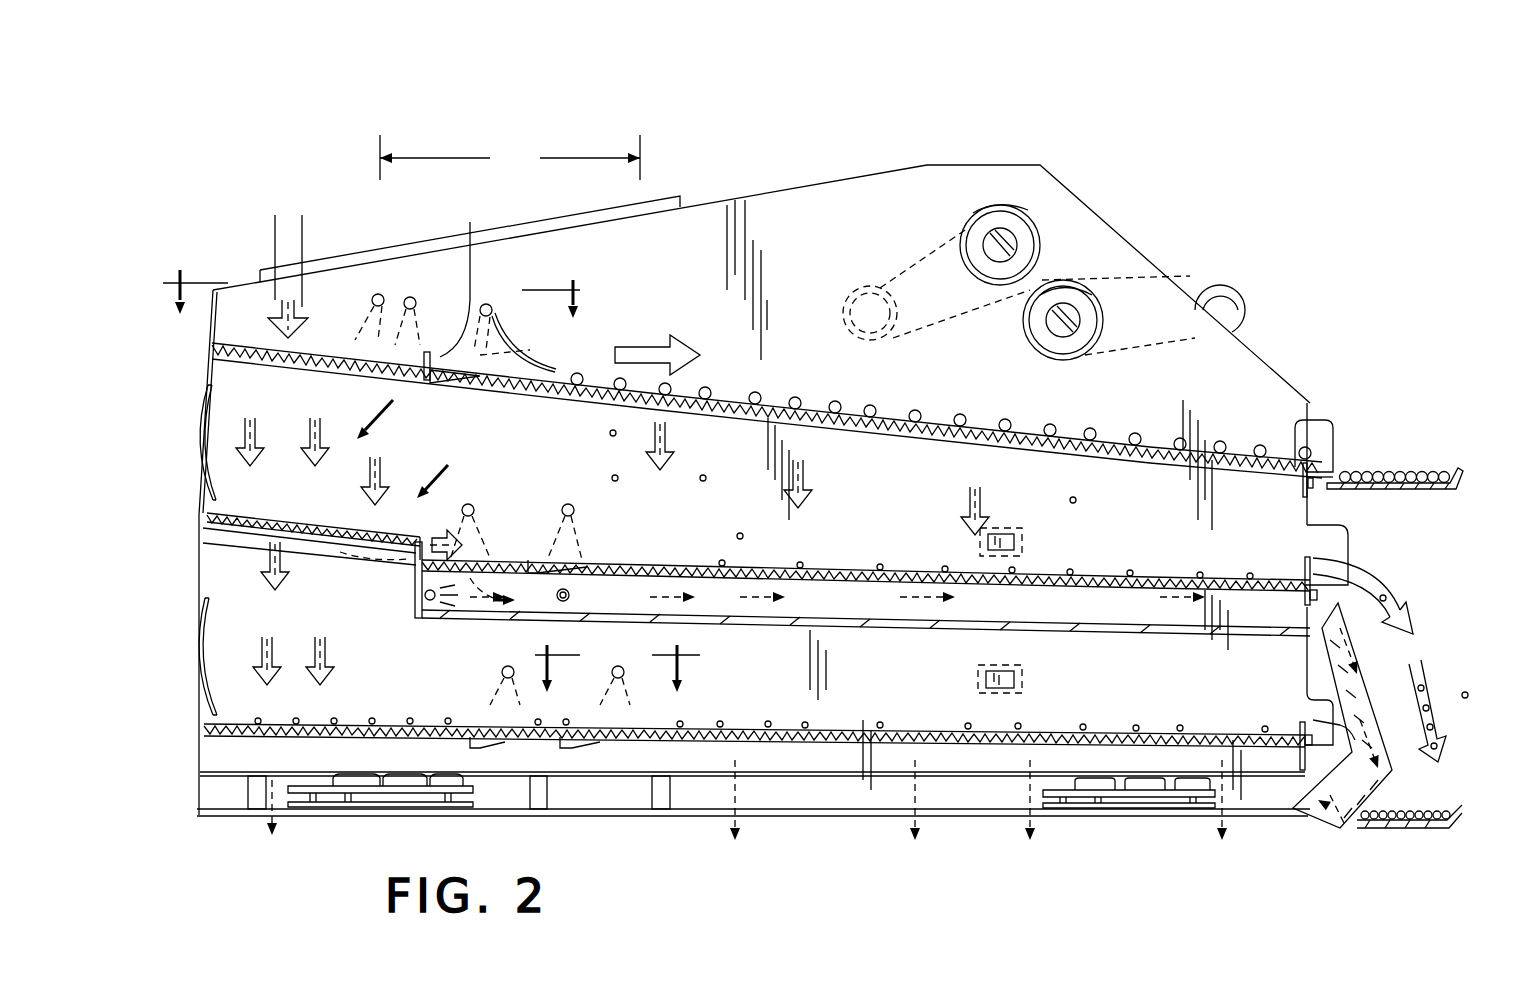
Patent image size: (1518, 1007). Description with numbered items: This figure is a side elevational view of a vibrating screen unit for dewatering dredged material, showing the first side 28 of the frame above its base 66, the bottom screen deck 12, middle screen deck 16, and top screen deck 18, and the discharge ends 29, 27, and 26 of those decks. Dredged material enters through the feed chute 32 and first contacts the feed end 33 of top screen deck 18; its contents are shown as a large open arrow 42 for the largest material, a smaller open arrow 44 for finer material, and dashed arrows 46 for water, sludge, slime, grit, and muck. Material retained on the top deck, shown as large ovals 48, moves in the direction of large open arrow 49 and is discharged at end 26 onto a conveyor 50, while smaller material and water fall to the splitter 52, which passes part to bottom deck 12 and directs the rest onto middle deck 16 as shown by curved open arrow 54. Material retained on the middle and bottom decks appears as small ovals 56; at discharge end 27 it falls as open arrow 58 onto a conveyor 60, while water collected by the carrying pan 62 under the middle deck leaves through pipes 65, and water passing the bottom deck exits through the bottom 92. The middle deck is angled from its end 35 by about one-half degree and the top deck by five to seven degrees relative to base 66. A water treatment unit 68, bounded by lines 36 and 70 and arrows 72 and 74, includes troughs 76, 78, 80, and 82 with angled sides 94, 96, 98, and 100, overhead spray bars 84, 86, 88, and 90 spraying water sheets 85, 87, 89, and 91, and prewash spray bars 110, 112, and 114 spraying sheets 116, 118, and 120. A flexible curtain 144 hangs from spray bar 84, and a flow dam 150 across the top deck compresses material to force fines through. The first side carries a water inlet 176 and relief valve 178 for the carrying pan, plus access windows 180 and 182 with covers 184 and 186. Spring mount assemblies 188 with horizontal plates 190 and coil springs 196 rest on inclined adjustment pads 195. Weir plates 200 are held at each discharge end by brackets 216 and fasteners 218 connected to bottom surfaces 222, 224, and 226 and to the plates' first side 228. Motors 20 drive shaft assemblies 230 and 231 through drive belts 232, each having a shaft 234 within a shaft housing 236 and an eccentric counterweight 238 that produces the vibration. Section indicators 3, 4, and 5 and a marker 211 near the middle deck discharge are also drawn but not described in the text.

The section line 3 is at (372, 276).
The section arrow 4 is at (411, 441).
The section line 5 is at (617, 657).
The bottom screen deck 12 is at (205, 710).
The middle screen deck 16 is at (200, 500).
The top screen deck 18 is at (215, 347).
The motor 20 is at (858, 285).
The discharge end of top screen deck 26 is at (1336, 450).
The discharge end of middle screen deck 27 is at (1325, 560).
The first side of frame 28 is at (755, 200).
The discharge end of bottom screen deck 29 is at (1320, 715).
The feed chute 32 is at (345, 256).
The feed end of top screen deck 33 is at (215, 348).
The end of middle screen deck 35 is at (414, 566).
The boundary line 36 is at (380, 147).
The large open arrow 42 is at (275, 235).
The smaller open arrow 44 is at (300, 302).
The dashed arrow 46 is at (285, 308).
The large ovals 48 is at (580, 374).
The large open arrow 49 is at (630, 340).
The conveyor 50 is at (1452, 492).
The splitter 52 is at (215, 532).
The curved large open arrow 54 is at (350, 562).
The small ovals 56 is at (618, 480).
The open arrow 58 is at (1415, 632).
The conveyor 60 is at (1372, 680).
The carrying pan 62 is at (1098, 626).
The pipe 65 is at (1355, 700).
The base 66 is at (575, 818).
The water treatment unit 68 is at (532, 250).
The boundary line 70 is at (640, 145).
The boundary arrow 72 is at (490, 156).
The boundary arrow 74 is at (580, 160).
The trough 76 is at (431, 400).
The trough 78 is at (510, 595).
The trough 80 is at (475, 742).
The trough 82 is at (575, 745).
The overhead spray bar 84 is at (487, 303).
The high pressure sheet of water 85 is at (520, 351).
The overhead spray bar 86 is at (568, 504).
The high pressure sheet of water 87 is at (580, 555).
The overhead spray bar 88 is at (502, 672).
The high pressure sheet of water 89 is at (512, 708).
The overhead spray bar 90 is at (618, 666).
The high pressure sheet of water 91 is at (632, 708).
The bottom of unit 92 is at (872, 810).
The angled side of trough 94 is at (450, 385).
The angled side of trough 96 is at (560, 570).
The angled side of trough 98 is at (490, 742).
The angled side of trough 100 is at (610, 742).
The overhead spray bar 110 is at (381, 296).
The overhead spray bar 112 is at (414, 298).
The overhead spray bar 114 is at (474, 504).
The high pressure sheet of water 116 is at (365, 325).
The high pressure sheet of water 118 is at (427, 311).
The high pressure sheet of water 120 is at (515, 509).
The flexible curtain 144 is at (512, 350).
The flow dam 150 is at (469, 278).
The water inlet 176 is at (424, 597).
The relief valve 178 is at (558, 600).
The access window 180 is at (1025, 530).
The access window 182 is at (1025, 680).
The cover 184 is at (1016, 546).
The cover 186 is at (1012, 686).
The spring mount assembly 188 is at (495, 790).
The horizontal plate 190 is at (280, 790).
The inclined adjustment pad 195 is at (312, 808).
The heavy coil spring 196 is at (360, 780).
The weir plate 200 is at (1310, 425).
The gap 211 is at (1295, 600).
The bracket 216 is at (1302, 472).
The fastener 218 is at (1316, 485).
The bottom surface of bottom screen deck 222 is at (1178, 745).
The bottom surface of middle screen deck 224 is at (1098, 590).
The bottom surface of top screen deck 226 is at (1200, 470).
The first side of weir plate 228 is at (1302, 495).
The shaft assembly 230 is at (1018, 200).
The shaft assembly 231 is at (1120, 300).
The drive belt 232 is at (920, 255).
The shaft 234 is at (1010, 232).
The shaft housing 236 is at (990, 212).
The shaft counterweight 238 is at (1005, 250).